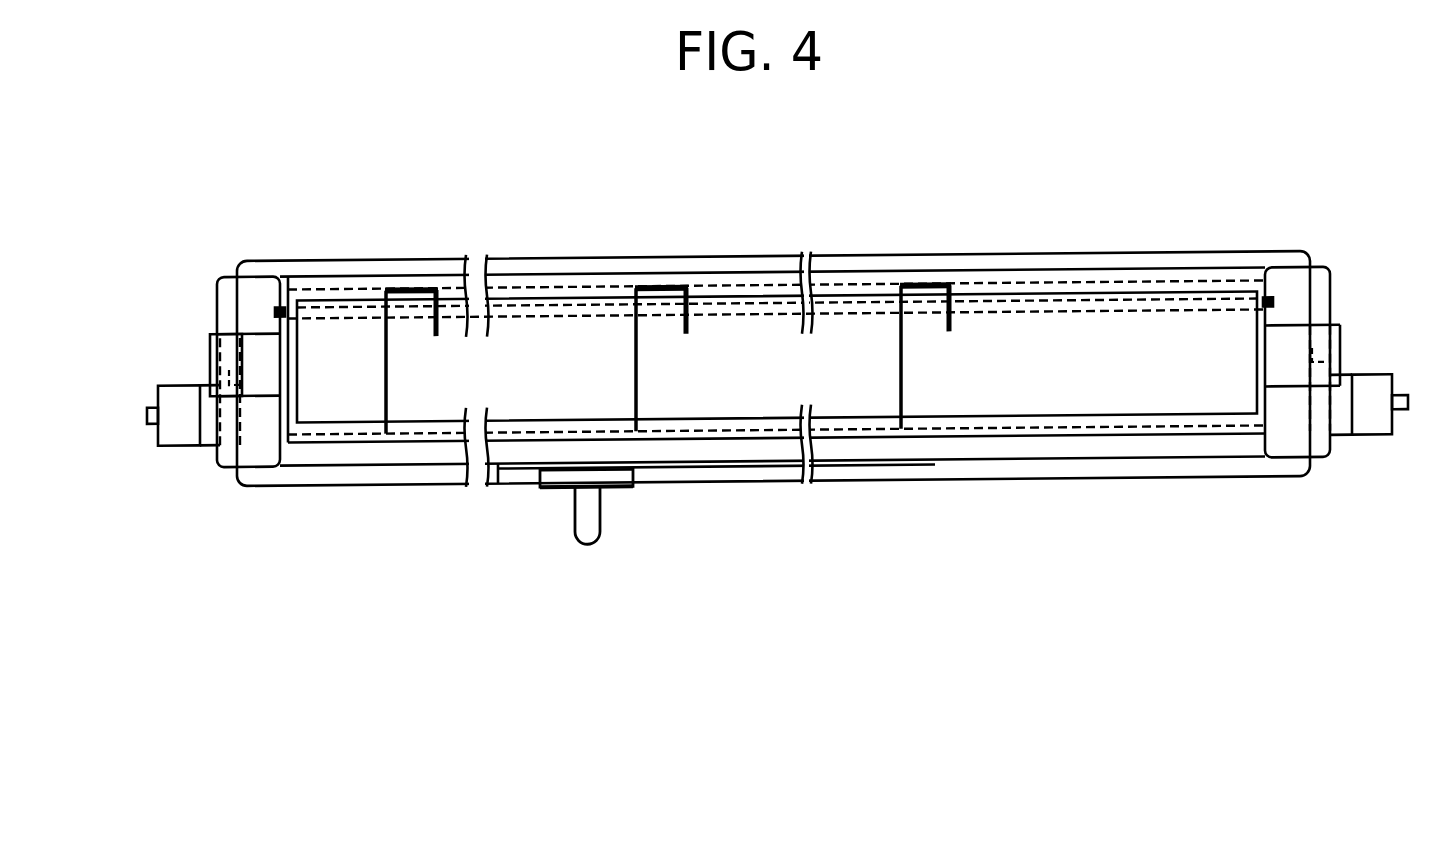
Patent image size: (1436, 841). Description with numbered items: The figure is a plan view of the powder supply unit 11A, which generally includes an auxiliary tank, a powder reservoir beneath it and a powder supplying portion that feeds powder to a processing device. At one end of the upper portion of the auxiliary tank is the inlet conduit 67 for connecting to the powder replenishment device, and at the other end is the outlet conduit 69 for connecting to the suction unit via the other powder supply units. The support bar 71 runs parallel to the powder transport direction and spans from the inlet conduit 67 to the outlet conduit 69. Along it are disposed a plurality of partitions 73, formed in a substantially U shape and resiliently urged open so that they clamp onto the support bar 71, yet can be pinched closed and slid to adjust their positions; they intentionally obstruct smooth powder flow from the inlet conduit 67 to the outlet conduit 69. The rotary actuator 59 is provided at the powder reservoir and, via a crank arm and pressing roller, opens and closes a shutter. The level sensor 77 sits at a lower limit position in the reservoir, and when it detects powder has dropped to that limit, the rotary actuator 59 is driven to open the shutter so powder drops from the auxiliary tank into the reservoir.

The powder supply unit 11A is at (1136, 233).
The rotary actuator 59 is at (180, 403).
The inlet conduit 67 is at (1322, 347).
The outlet conduit 69 is at (212, 334).
The support bar 71 is at (1132, 312).
The partitions 73 is at (389, 375).
The level sensor 77 is at (615, 472).